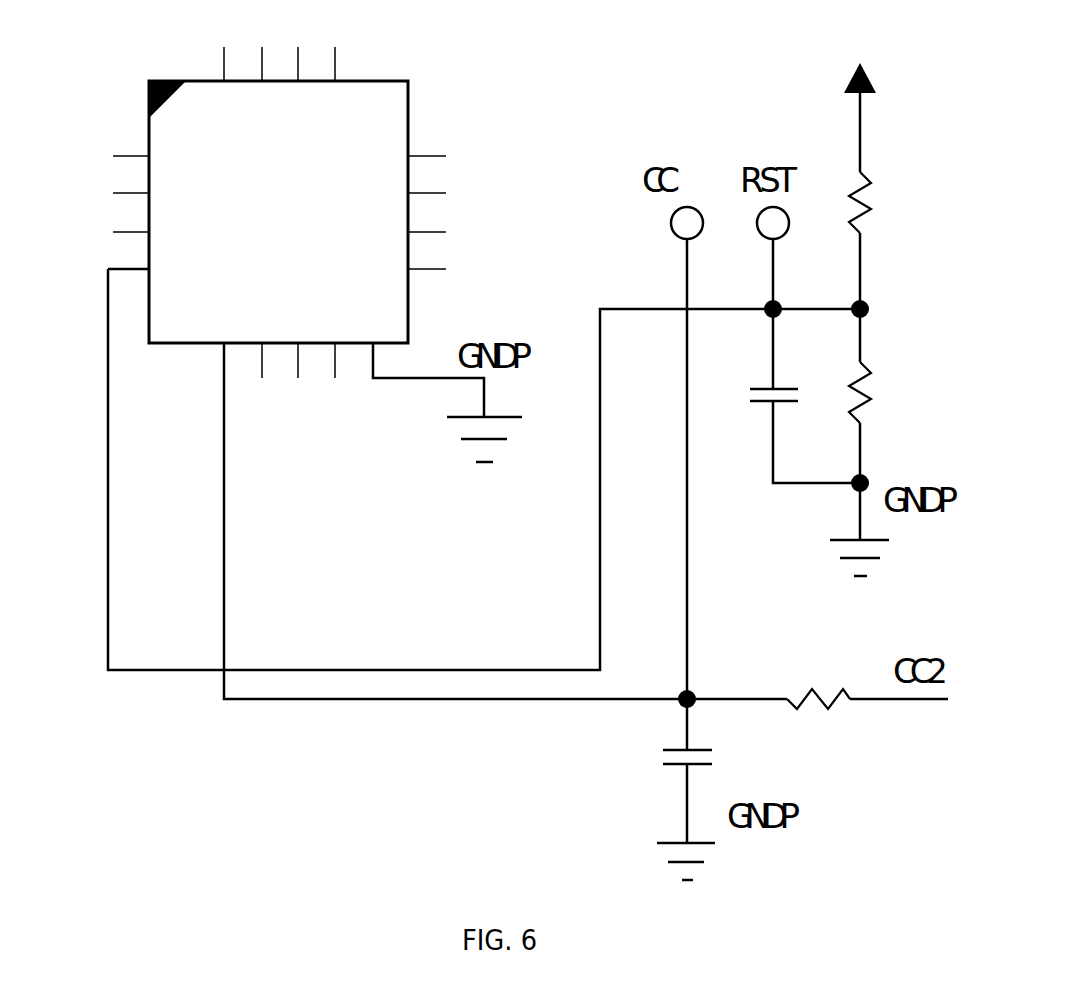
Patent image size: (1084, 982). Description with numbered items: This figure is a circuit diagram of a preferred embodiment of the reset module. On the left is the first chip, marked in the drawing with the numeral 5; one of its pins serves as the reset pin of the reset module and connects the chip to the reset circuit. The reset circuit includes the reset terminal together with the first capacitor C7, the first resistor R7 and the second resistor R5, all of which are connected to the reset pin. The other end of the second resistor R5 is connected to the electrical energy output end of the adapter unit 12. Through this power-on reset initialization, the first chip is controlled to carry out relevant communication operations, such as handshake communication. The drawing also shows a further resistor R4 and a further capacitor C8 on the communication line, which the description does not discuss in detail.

The control chip 5 is at (244, 214).
The adapter unit 12 is at (861, 94).
The second resistor R5 is at (884, 206).
The first resistor R7 is at (881, 392).
The resistor R4 is at (818, 680).
The first capacitor C7 is at (760, 376).
The capacitor C8 is at (665, 756).